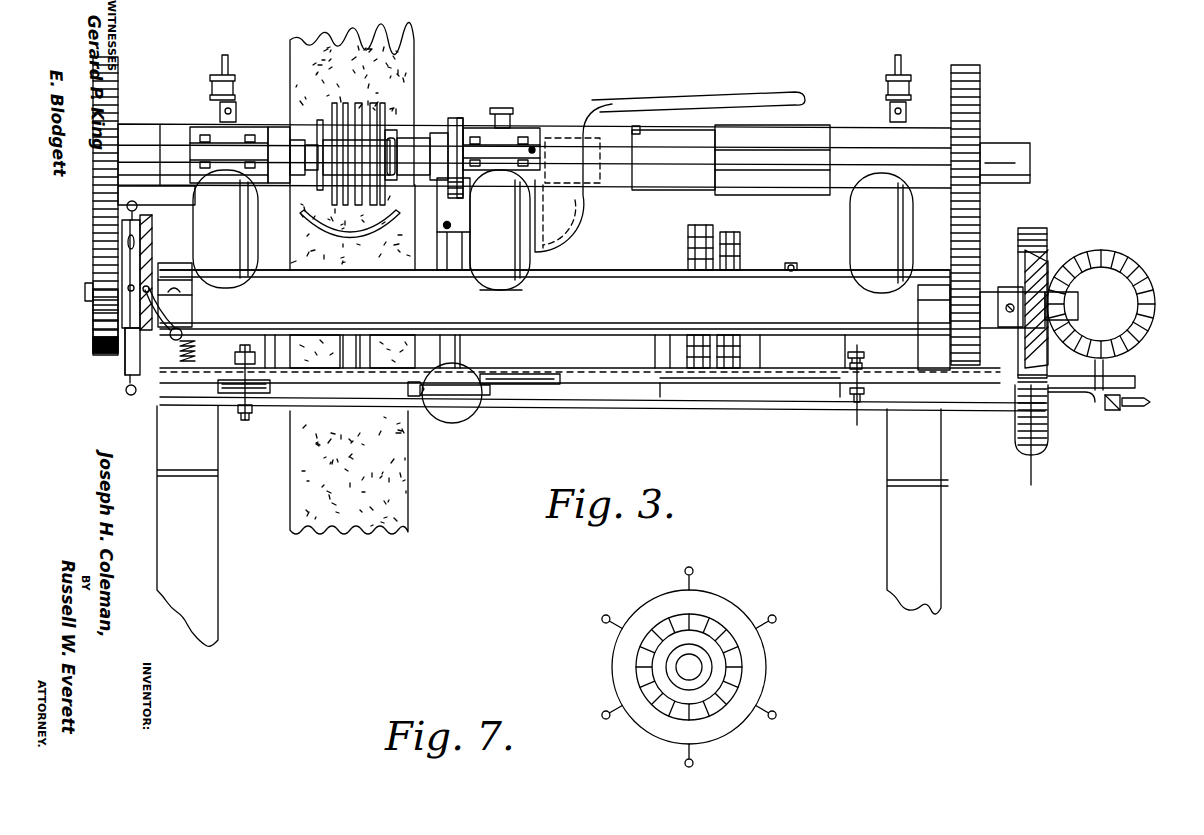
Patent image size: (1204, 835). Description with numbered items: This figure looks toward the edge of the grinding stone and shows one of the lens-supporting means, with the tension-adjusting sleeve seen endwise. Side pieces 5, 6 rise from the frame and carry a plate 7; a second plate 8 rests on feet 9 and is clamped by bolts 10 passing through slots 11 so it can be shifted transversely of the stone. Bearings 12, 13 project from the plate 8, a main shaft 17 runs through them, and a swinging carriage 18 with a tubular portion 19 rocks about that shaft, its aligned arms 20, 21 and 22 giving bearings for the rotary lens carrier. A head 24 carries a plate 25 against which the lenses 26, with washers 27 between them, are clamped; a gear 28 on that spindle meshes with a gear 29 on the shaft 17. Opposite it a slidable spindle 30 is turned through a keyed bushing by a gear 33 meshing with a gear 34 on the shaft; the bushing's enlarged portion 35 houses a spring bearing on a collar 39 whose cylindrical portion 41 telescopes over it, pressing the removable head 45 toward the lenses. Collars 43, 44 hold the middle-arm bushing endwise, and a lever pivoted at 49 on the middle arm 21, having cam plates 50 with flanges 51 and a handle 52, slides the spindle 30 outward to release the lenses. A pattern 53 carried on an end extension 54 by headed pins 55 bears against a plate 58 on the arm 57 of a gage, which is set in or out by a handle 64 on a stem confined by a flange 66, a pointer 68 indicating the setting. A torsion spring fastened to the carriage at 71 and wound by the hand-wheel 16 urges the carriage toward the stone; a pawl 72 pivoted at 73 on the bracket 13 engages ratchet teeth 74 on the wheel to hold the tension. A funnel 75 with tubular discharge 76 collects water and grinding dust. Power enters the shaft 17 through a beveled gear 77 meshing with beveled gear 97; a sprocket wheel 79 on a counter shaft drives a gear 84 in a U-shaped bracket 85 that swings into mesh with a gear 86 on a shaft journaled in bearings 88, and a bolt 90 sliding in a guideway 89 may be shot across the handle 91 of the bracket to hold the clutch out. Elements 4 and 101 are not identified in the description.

In FIG. 3, the standard 4 is at (402, 483).
In FIG. 3, the side piece 5 is at (200, 563).
In FIG. 3, the side piece 6 is at (900, 528).
In FIG. 3, the plate 7 is at (748, 410).
In FIG. 3, the second plate 8 is at (760, 386).
In FIG. 3, the feet 9 is at (247, 427).
In FIG. 3, the bolts 10 is at (238, 415).
In FIG. 3, the slots 11 is at (218, 385).
In FIG. 3, the bearing 12 is at (932, 338).
In FIG. 3, the bearing 13 is at (192, 305).
In FIG. 3, the hand-wheel 16 is at (125, 370).
In FIG. 7, the hand-wheel 16 is at (722, 618).
In FIG. 3, the main shaft 17 is at (85, 296).
In FIG. 7, the main shaft 17 is at (707, 669).
In FIG. 3, the swinging carriage 18 is at (515, 288).
In FIG. 3, the tubular portion 19 is at (598, 284).
In FIG. 3, the arm 20 is at (881, 233).
In FIG. 3, the middle arm 21 is at (500, 230).
In FIG. 3, the arm 22 is at (225, 229).
In FIG. 3, the head 24 is at (287, 137).
In FIG. 3, the plate 25 is at (312, 132).
In FIG. 3, the lenses 26 is at (328, 110).
In FIG. 3, the washers 27 is at (352, 115).
In FIG. 3, the gear 28 is at (120, 88).
In FIG. 3, the gear 29 is at (93, 345).
In FIG. 3, the slidable spindle 30 is at (1020, 153).
In FIG. 3, the gear 33 is at (970, 63).
In FIG. 3, the gear 34 is at (975, 318).
In FIG. 3, the enlarged end portion 35 is at (747, 140).
In FIG. 3, the collar 39 is at (636, 126).
In FIG. 3, the cylindrical portion 41 is at (685, 150).
In FIG. 3, the collar 43 is at (535, 147).
In FIG. 3, the collar 44 is at (492, 130).
In FIG. 3, the removable head 45 is at (405, 142).
In FIG. 3, the pivot 49 is at (572, 160).
In FIG. 3, the cam plates 50 is at (580, 205).
In FIG. 3, the flanges 51 is at (572, 238).
In FIG. 3, the handle 52 is at (678, 100).
In FIG. 3, the pattern 53 is at (453, 118).
In FIG. 3, the end extension 54 is at (438, 135).
In FIG. 3, the headed pins 55 is at (462, 118).
In FIG. 3, the arm 57 is at (452, 270).
In FIG. 3, the plate 58 is at (452, 222).
In FIG. 3, the handle 64 is at (470, 414).
In FIG. 3, the flange 66 is at (595, 386).
In FIG. 3, the pointer 68 is at (425, 392).
In FIG. 3, the spring attachment 71 is at (793, 264).
In FIG. 3, the pawl 72 is at (180, 352).
In FIG. 3, the pivot 73 is at (183, 330).
In FIG. 3, the ratchet teeth 74 is at (150, 255).
In FIG. 7, the ratchet teeth 74 is at (665, 632).
In FIG. 3, the funnel 75 is at (350, 239).
In FIG. 3, the tubular discharge 76 is at (350, 360).
In FIG. 3, the beveled gear 77 is at (1042, 275).
In FIG. 3, the sprocket wheel 79 is at (712, 248).
In FIG. 3, the gear 84 is at (1031, 470).
In FIG. 3, the U-shaped bracket 85 is at (1017, 440).
In FIG. 3, the gear 86 is at (1032, 228).
In FIG. 3, the bearings 88 is at (1106, 370).
In FIG. 3, the guideway 89 is at (1101, 412).
In FIG. 3, the bolt 90 is at (1120, 412).
In FIG. 3, the handle 91 is at (1136, 383).
In FIG. 3, the beveled gear 97 is at (1142, 285).
In FIG. 3, the spool 101 is at (740, 256).